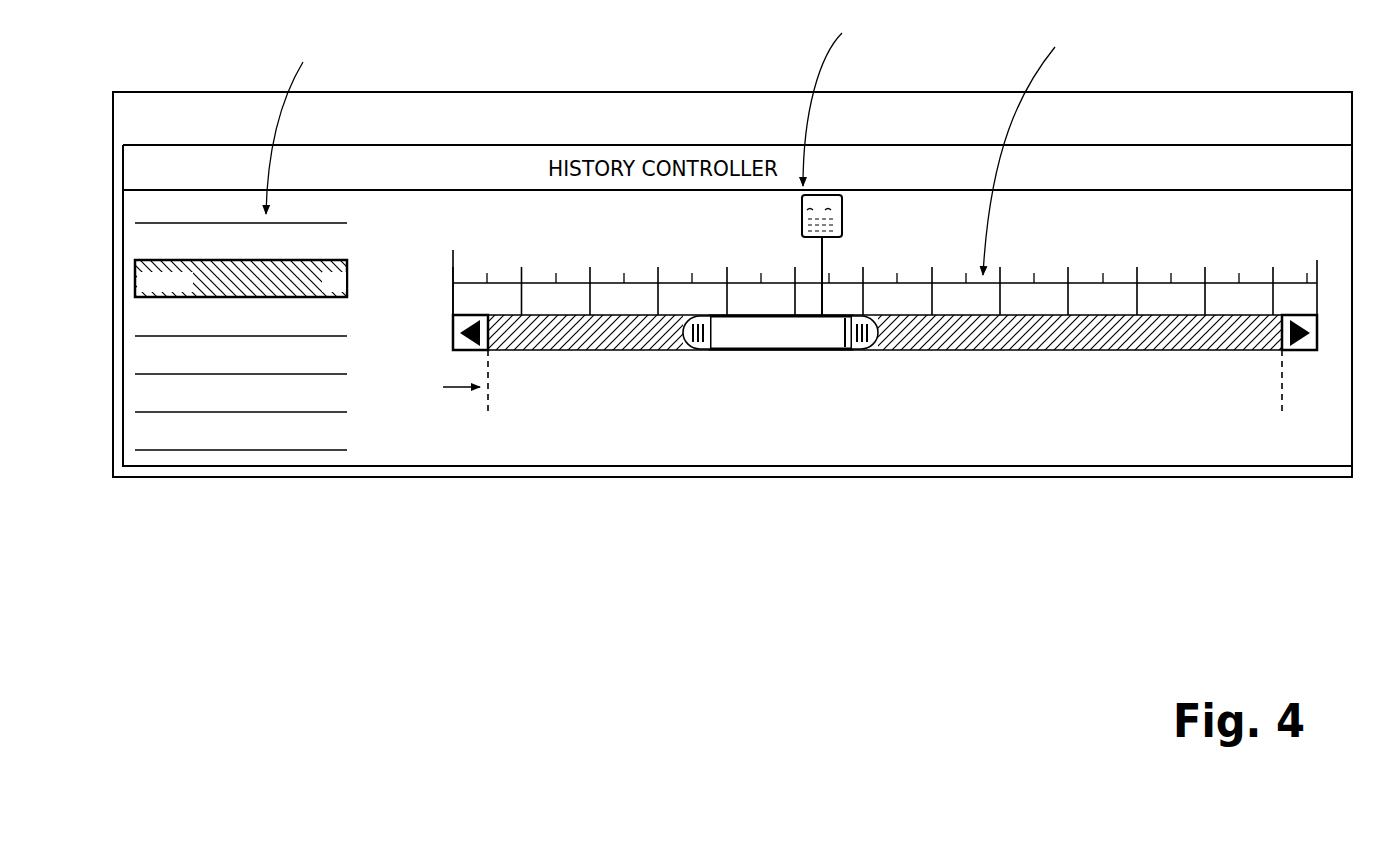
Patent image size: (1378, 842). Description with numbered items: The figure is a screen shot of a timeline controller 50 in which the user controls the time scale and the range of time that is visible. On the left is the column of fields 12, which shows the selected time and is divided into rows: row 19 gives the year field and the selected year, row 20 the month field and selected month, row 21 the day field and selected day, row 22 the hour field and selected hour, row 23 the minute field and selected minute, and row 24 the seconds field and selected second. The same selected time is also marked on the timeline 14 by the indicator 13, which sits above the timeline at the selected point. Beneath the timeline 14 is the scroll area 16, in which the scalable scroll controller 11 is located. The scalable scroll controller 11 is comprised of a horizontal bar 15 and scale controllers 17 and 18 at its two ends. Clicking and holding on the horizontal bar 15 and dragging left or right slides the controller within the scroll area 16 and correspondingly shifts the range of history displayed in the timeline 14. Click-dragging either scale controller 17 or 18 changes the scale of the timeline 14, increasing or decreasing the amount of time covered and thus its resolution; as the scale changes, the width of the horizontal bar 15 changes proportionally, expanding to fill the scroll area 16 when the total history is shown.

The timeline controller 50 is at (1329, 60).
The column of fields 12 is at (145, 223).
The year row 19 is at (135, 243).
The month row 20 is at (135, 293).
The day row 21 is at (135, 327).
The hour row 22 is at (135, 365).
The minute row 23 is at (135, 401).
The second row 24 is at (135, 440).
The timeline 14 is at (999, 315).
The indicator 13 is at (843, 213).
The scalable scroll controller 11 is at (782, 367).
The horizontal bar 15 is at (822, 338).
The scale controller 17 is at (703, 353).
The scale controller 18 is at (877, 351).
The scroll area 16 is at (1291, 387).